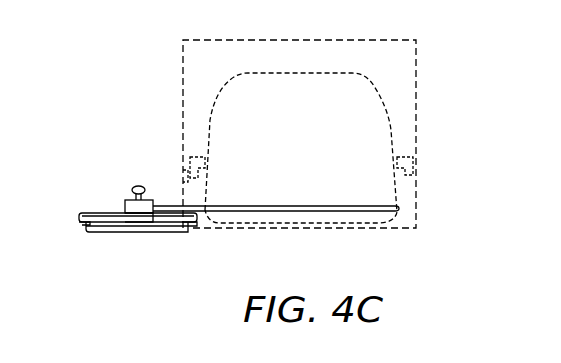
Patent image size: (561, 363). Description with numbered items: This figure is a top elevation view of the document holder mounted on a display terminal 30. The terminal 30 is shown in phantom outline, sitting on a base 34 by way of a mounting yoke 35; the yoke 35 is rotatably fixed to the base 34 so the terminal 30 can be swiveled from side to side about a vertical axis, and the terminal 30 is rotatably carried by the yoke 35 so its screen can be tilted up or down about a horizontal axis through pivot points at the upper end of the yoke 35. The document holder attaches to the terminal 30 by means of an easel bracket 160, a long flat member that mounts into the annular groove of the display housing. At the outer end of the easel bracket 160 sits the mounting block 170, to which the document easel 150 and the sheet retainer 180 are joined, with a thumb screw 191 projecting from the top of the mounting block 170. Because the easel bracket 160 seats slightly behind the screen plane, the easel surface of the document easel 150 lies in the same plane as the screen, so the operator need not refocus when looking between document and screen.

The base 34 is at (414, 24).
The display terminal 30 is at (388, 112).
The mounting yoke 35 is at (189, 160).
The easel bracket 160 is at (356, 204).
The thumb screw 191 is at (134, 187).
The mounting block 170 is at (127, 204).
The sheet retainer 180 is at (84, 228).
The document easel 150 is at (148, 217).